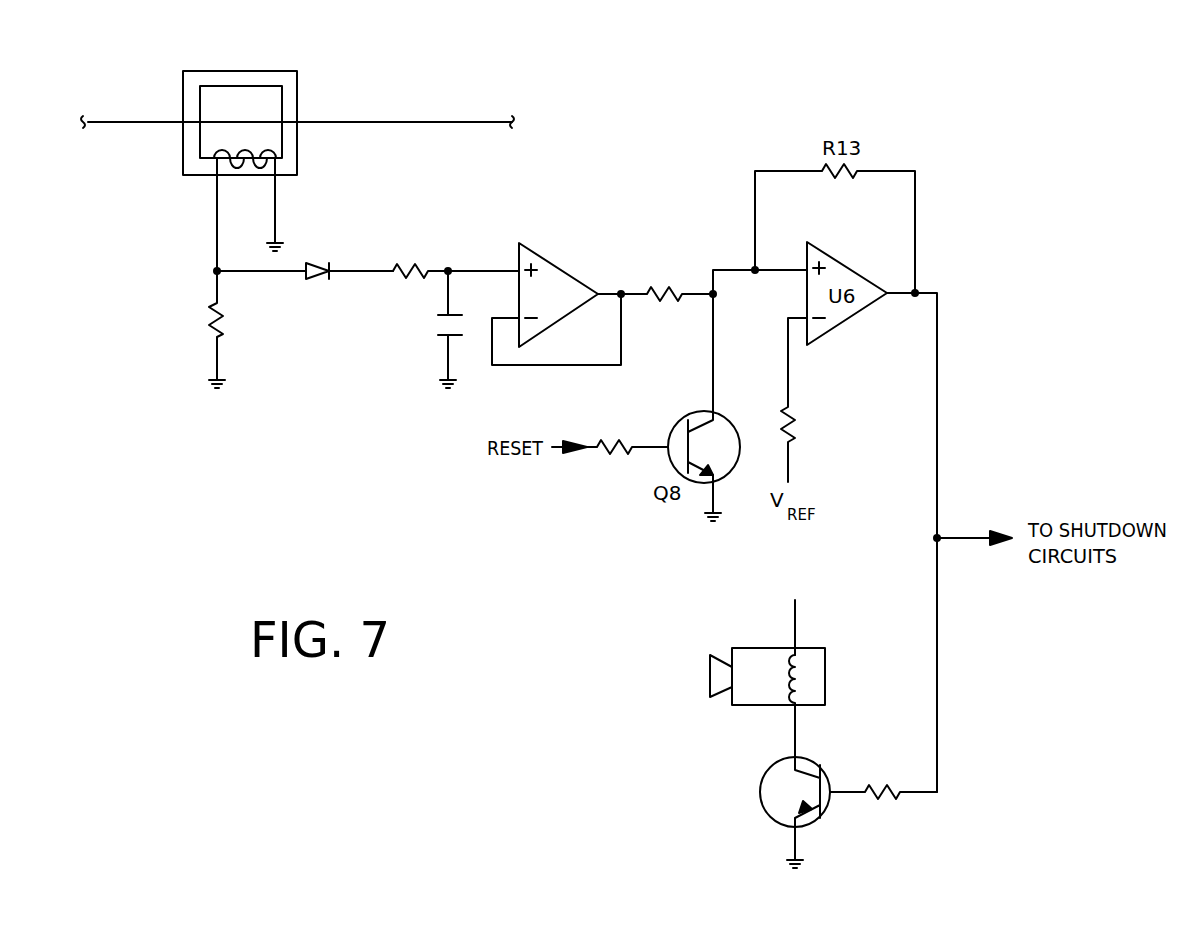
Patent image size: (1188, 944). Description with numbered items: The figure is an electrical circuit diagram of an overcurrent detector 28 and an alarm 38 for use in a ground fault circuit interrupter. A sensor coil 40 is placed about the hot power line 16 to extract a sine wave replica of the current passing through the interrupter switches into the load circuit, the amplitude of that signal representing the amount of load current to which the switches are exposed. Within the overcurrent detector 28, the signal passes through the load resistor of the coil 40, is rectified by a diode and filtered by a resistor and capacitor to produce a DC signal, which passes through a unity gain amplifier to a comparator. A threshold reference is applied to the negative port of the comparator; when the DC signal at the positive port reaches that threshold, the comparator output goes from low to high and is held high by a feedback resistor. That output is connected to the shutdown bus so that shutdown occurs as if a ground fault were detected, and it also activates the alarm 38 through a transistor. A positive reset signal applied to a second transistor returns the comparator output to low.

The hot power line 16 is at (413, 124).
The sensor coil 40 is at (183, 156).
The overcurrent detector 28 is at (313, 388).
The alarm 38 is at (965, 737).